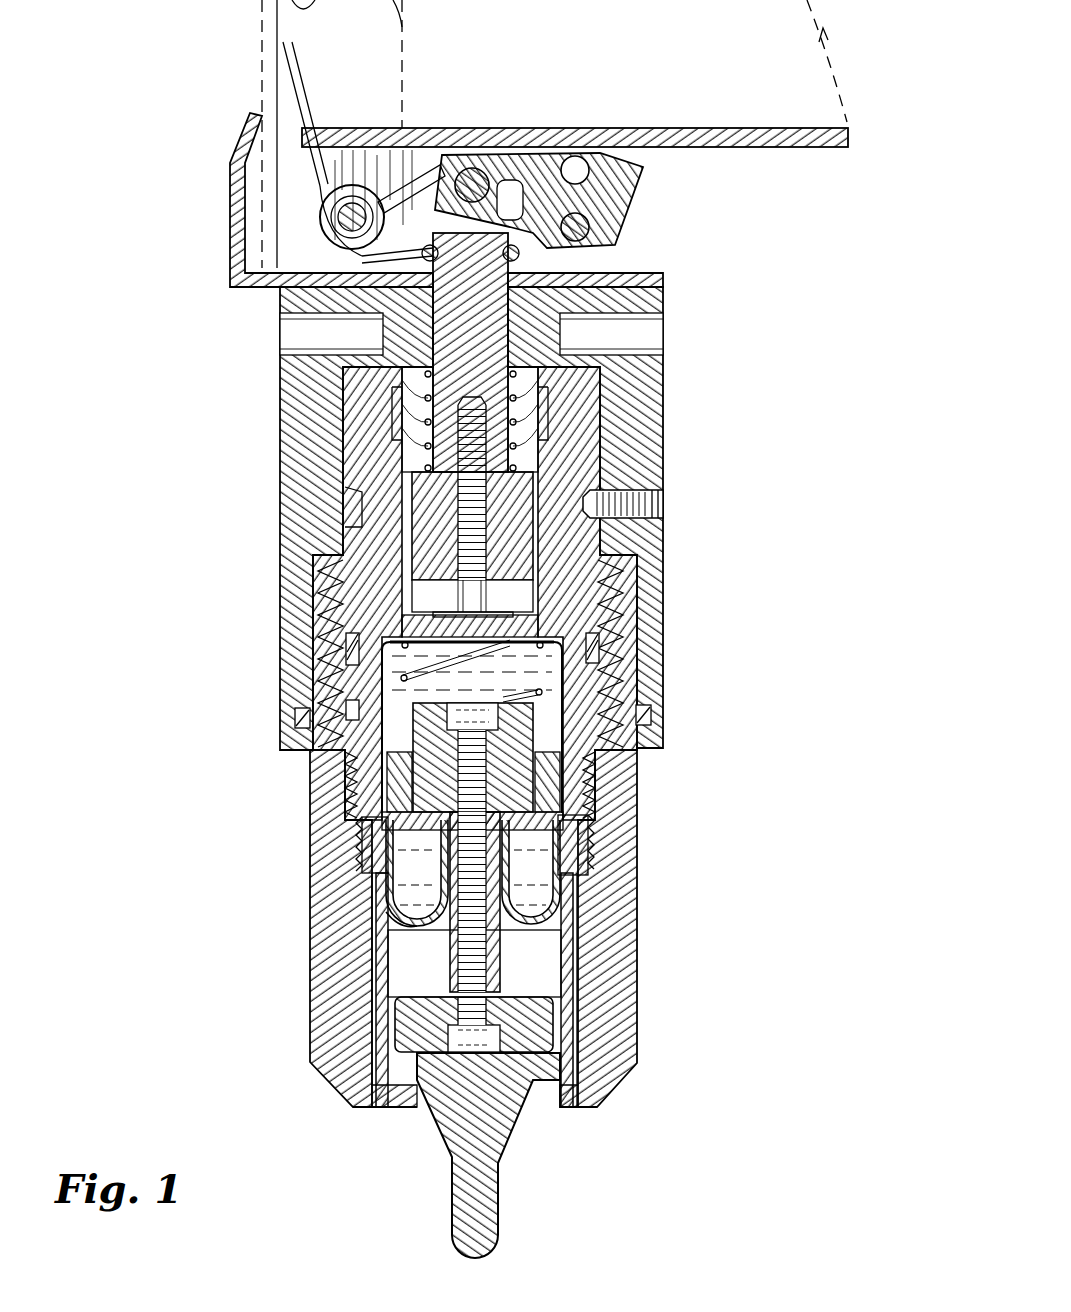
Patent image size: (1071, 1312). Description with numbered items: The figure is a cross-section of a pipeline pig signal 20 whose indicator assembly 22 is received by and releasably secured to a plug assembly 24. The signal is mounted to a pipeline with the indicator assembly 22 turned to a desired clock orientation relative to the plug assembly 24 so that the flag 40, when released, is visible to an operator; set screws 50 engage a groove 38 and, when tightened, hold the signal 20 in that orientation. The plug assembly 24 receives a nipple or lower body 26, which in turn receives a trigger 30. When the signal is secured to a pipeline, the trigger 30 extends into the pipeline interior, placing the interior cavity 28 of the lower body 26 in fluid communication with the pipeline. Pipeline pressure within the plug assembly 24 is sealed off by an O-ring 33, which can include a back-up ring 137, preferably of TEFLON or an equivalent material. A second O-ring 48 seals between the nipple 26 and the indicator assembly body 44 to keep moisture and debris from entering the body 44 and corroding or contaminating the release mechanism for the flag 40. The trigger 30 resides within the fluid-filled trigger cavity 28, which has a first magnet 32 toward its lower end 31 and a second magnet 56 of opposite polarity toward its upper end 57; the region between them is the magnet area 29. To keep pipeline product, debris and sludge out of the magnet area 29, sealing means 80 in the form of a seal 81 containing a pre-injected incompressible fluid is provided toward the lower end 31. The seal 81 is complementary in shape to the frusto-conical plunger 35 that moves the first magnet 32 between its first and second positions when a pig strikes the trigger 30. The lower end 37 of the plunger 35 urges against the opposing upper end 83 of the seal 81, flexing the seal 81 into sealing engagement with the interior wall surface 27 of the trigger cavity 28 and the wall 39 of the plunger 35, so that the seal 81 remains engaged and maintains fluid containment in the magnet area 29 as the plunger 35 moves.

The pipeline pig signal 20 is at (511, 730).
The indicator assembly 22 is at (665, 395).
The plug assembly 24 is at (377, 1007).
The lower body 26 is at (623, 1012).
The interior wall surface 27 is at (557, 676).
The trigger cavity 28 is at (535, 938).
The magnet area 29 is at (510, 691).
The trigger 30 is at (498, 1193).
The lower end 31 is at (543, 1108).
The first magnet 32 is at (413, 717).
The O-ring 33 is at (347, 658).
The plunger 35 is at (383, 780).
The lower end 37 is at (396, 902).
The groove 38 is at (350, 512).
The wall 39 is at (582, 850).
The flag 40 is at (767, 128).
The indicator assembly body 44 is at (650, 607).
The second O-ring 48 is at (640, 712).
The set screws 50 is at (668, 500).
The second magnet 56 is at (423, 483).
The upper end 57 is at (430, 370).
The sealing means 80 is at (397, 923).
The seal 81 is at (423, 927).
The upper end 83 is at (373, 833).
The back-up ring 137 is at (347, 640).